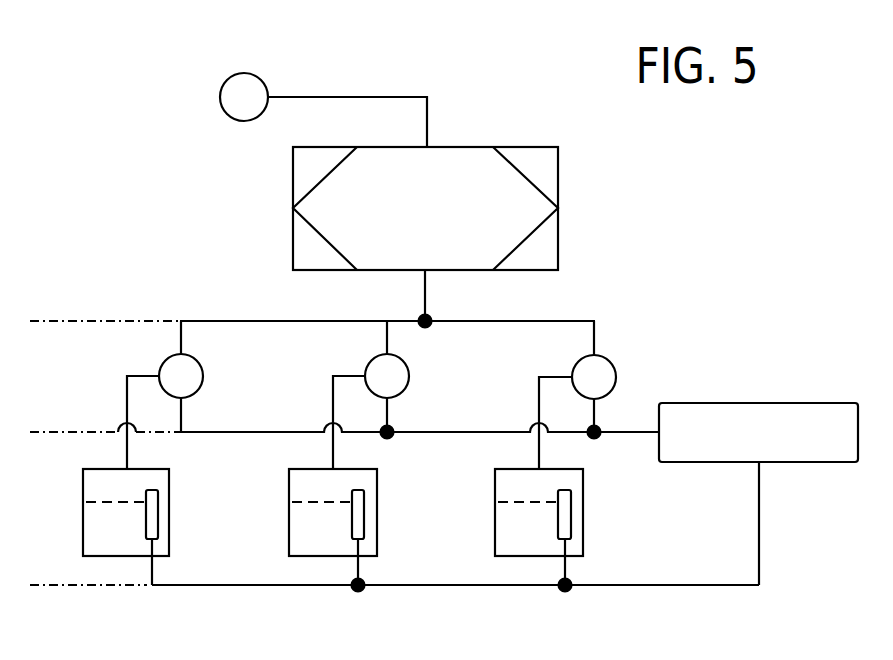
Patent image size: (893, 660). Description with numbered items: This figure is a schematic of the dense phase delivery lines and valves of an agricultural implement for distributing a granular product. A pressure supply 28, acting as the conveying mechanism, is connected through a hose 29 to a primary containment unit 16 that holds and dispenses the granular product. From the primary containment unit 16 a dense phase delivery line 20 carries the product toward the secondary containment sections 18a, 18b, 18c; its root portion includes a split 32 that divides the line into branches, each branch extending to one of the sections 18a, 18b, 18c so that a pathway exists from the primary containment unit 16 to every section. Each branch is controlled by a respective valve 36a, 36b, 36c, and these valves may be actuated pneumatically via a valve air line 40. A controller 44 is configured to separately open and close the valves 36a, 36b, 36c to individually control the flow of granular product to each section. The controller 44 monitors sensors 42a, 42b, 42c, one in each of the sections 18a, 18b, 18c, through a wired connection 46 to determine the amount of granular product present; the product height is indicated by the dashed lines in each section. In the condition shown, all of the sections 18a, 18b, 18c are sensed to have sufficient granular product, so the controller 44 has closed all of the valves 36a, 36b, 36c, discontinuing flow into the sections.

The primary containment unit 16 is at (433, 216).
The section 18a is at (93, 542).
The section 18b is at (299, 542).
The section 18c is at (506, 542).
The dense phase delivery line 20 is at (500, 321).
The pressure supply 28 is at (243, 73).
The hose 29 is at (343, 95).
The split 32 is at (426, 328).
The valve 36a is at (197, 393).
The valve 36b is at (398, 392).
The valve 36c is at (607, 360).
The valve air line 40 is at (636, 432).
The sensor 42a is at (158, 521).
The sensor 42b is at (364, 521).
The sensor 42c is at (571, 521).
The controller 44 is at (757, 403).
The wired connection 46 is at (680, 586).